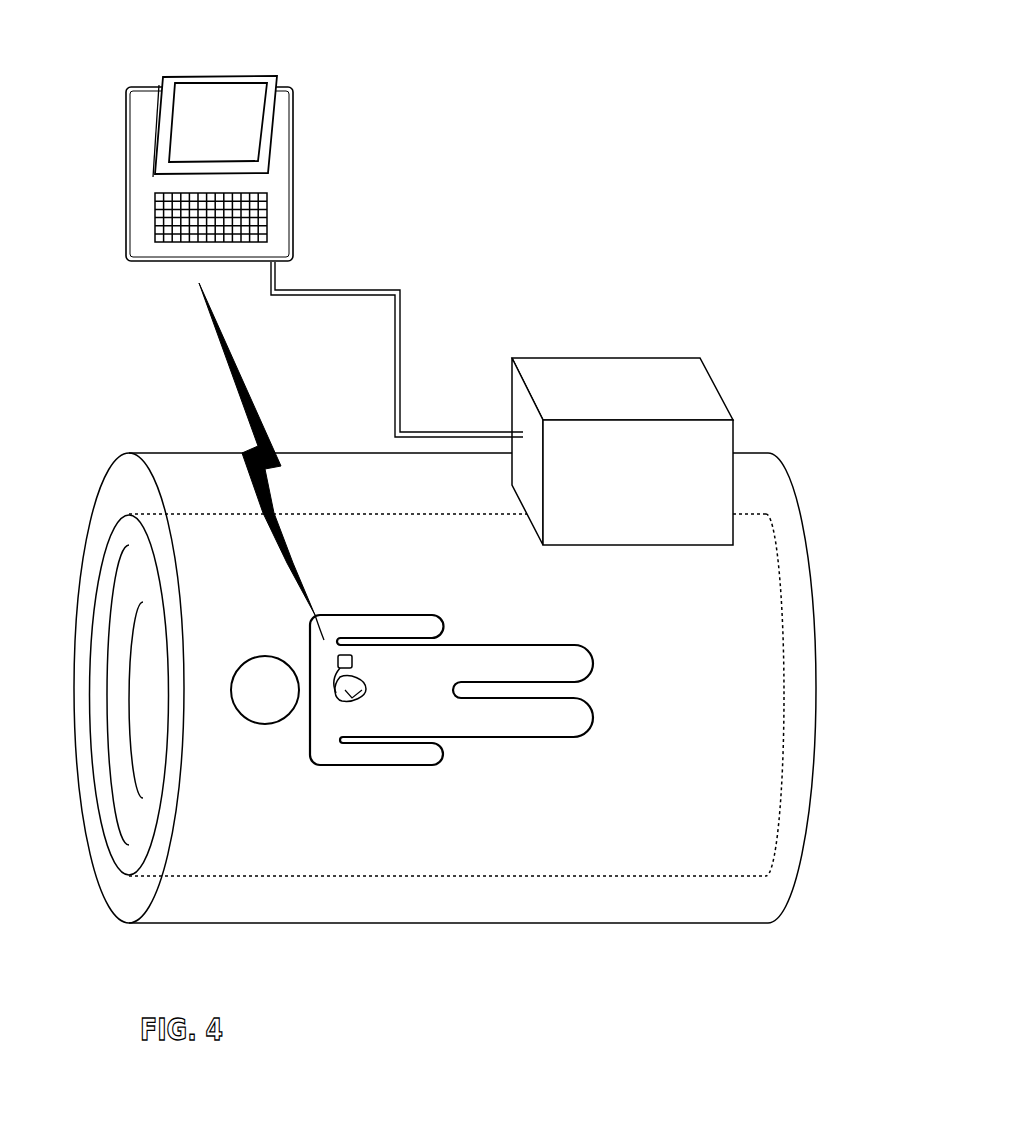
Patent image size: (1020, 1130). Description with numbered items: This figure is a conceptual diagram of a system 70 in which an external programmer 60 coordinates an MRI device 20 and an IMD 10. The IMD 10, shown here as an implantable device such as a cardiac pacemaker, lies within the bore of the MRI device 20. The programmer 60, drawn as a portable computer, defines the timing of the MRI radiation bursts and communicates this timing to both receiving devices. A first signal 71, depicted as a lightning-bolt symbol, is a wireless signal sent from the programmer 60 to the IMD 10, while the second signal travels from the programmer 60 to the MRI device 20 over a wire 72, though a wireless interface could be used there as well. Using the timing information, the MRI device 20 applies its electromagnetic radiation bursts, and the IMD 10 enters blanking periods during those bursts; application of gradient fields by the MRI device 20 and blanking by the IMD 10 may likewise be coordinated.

The IMD 10 is at (362, 662).
The MRI device 20 is at (760, 419).
The external programmer 60 is at (293, 106).
The system 70 is at (632, 107).
The first signal 71 is at (240, 396).
The wire 72 is at (403, 343).